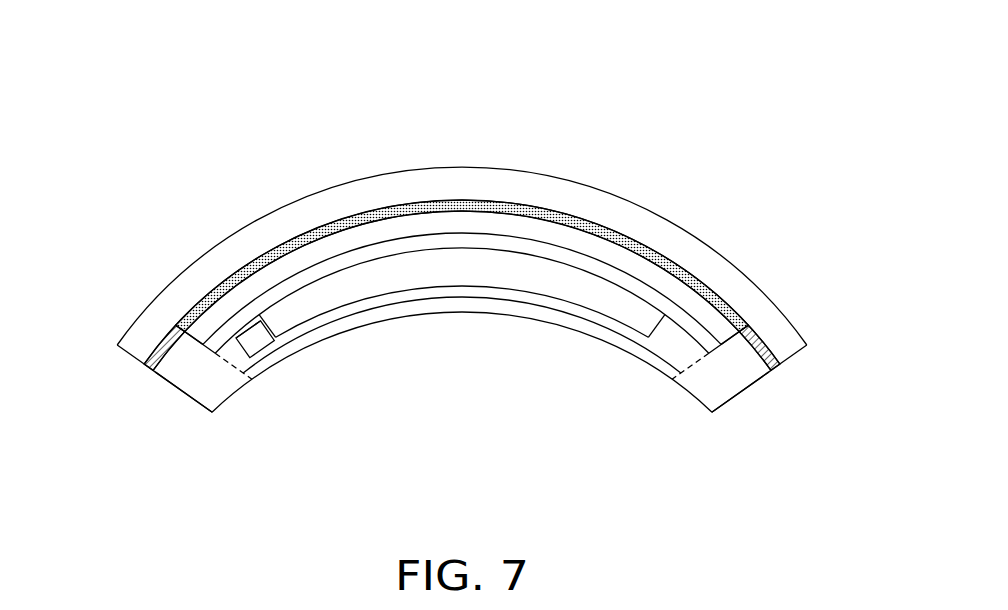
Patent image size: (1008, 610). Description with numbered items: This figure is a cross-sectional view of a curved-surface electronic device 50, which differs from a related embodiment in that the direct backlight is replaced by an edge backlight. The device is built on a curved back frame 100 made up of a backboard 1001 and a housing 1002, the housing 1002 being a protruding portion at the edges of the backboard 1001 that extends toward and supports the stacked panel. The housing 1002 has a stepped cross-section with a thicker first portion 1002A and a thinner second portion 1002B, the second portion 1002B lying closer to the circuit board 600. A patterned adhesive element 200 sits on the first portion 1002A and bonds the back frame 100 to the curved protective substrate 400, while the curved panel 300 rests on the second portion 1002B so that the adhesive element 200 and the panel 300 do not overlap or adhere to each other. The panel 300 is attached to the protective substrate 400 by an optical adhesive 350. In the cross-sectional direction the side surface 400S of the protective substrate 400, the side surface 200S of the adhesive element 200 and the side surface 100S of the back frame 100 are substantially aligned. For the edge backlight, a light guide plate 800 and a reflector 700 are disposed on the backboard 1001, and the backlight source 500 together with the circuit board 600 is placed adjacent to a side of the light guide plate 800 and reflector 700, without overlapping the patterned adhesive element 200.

The electronic device 50 is at (111, 131).
The back frame 100 is at (526, 358).
The backboard 1001 is at (640, 353).
The housing 1002 is at (526, 333).
The first portion 1002A is at (208, 380).
The second portion 1002B is at (237, 362).
The side surface of back frame 100S is at (176, 388).
The patterned adhesive element 200 is at (795, 332).
The side surface of patterned adhesive element 200S is at (145, 368).
The panel 300 is at (567, 232).
The optical adhesive 350 is at (468, 198).
The protective substrate 400 is at (683, 246).
The side surface of protective substrate 400S is at (128, 355).
The backlight source 500 is at (247, 337).
The circuit board 600 is at (265, 350).
The reflector 700 is at (497, 296).
The light guide plate 800 is at (415, 273).